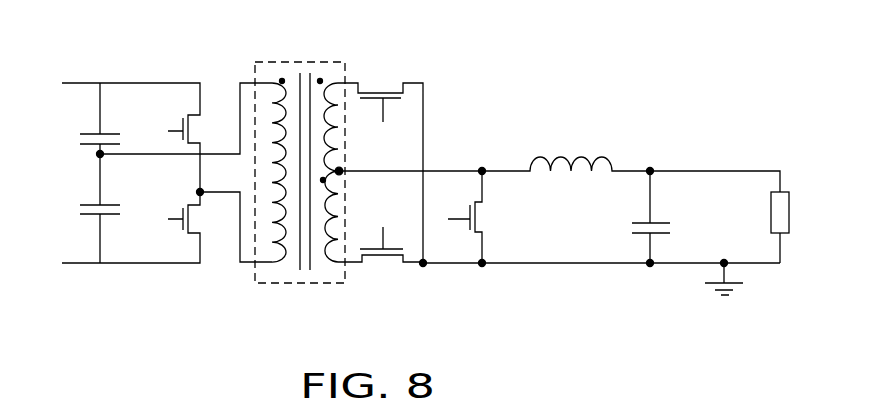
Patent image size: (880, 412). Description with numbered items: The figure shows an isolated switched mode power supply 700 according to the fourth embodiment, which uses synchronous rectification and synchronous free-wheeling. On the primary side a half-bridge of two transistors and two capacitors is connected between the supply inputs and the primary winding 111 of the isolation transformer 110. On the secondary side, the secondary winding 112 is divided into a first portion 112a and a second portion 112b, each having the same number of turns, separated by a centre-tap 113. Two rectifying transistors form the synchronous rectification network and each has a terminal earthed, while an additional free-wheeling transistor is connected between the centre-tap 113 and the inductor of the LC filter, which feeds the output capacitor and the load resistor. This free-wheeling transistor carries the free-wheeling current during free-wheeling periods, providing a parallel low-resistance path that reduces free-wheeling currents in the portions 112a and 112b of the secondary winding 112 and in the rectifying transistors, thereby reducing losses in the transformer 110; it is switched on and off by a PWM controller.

The isolation transformer 110 is at (299, 61).
The primary winding 111 is at (272, 272).
The secondary winding 112 is at (325, 272).
The first portion of the secondary winding 112a is at (330, 111).
The second portion of the secondary winding 112b is at (348, 220).
The centre-tap 113 is at (347, 177).
The isolated SMPS 700 is at (549, 76).